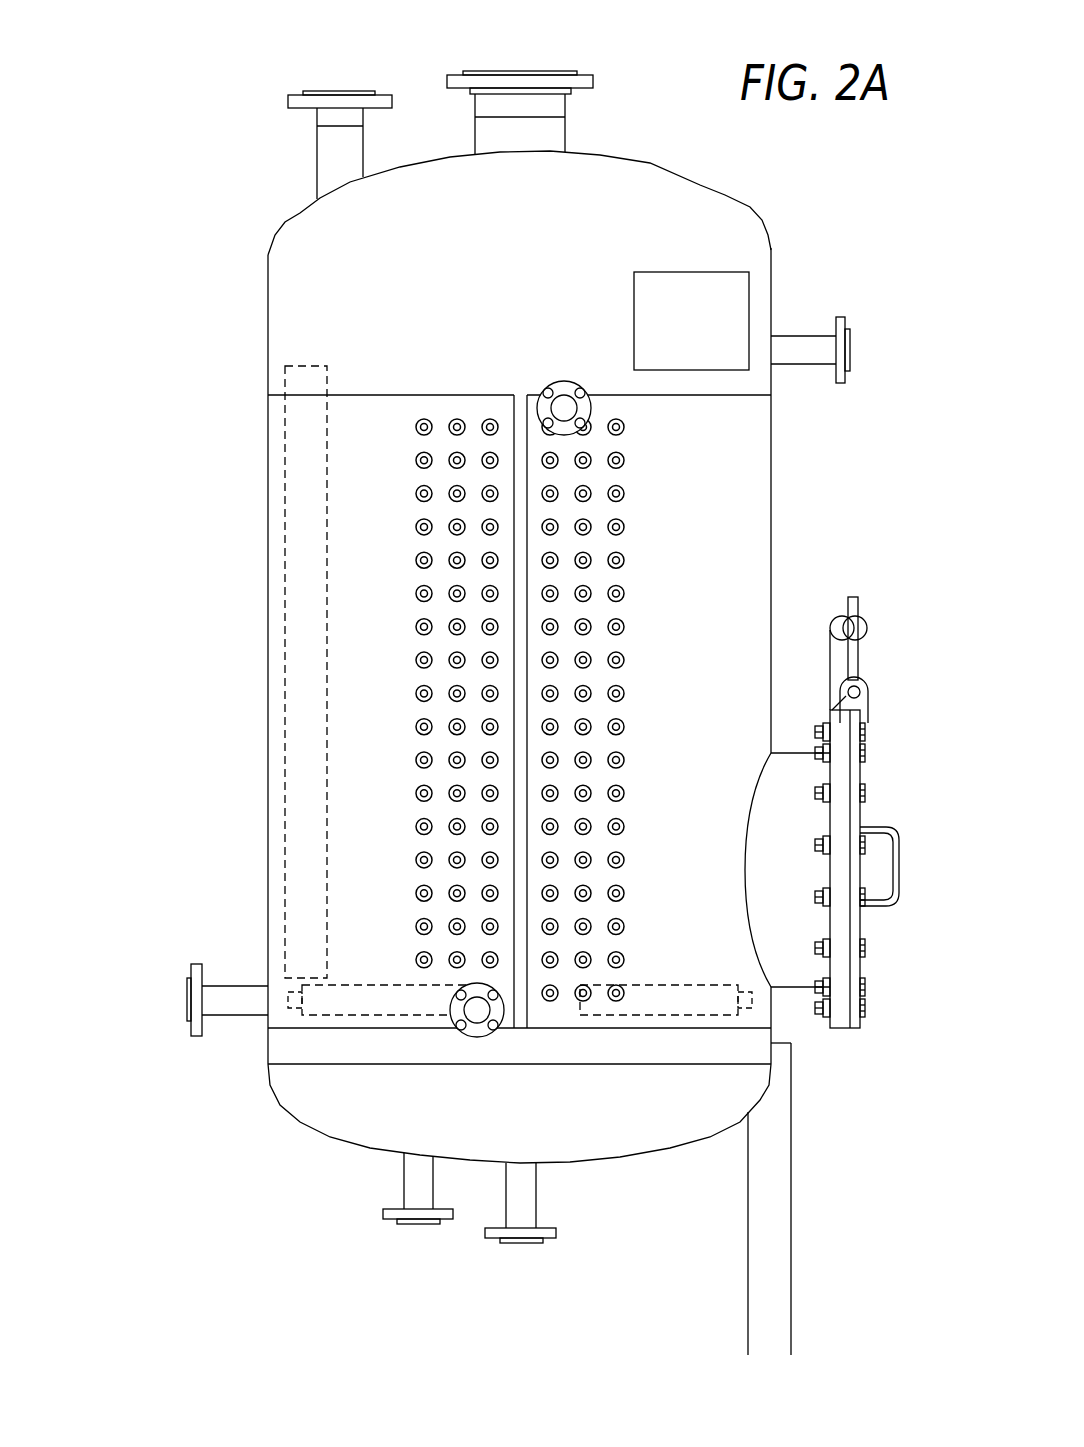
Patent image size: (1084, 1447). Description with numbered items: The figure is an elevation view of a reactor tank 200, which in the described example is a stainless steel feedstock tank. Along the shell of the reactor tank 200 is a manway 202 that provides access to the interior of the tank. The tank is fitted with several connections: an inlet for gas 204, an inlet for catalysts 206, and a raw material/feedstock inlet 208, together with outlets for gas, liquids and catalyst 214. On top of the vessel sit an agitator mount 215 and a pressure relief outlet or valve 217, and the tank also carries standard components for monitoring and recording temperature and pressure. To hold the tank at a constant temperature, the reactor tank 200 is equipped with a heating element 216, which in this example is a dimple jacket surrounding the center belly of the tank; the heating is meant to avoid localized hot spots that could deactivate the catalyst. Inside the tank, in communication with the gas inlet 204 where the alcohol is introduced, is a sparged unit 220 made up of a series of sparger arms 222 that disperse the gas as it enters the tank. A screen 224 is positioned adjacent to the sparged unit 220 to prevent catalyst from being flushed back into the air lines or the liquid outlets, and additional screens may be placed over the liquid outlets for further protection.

The reactor tank 200 is at (192, 368).
The manway 202 is at (858, 812).
The gas inlet 204 is at (157, 980).
The catalyst inlet 206 is at (367, 101).
The raw material/feedstock inlet 208 is at (850, 340).
The catalyst outlet 214 is at (157, 980).
The agitator mount 215 is at (548, 73).
The heating element 216 is at (771, 458).
The pressure relief outlet or valve 217 is at (367, 101).
The sparged unit 220 is at (368, 930).
The sparger arms 222 is at (342, 1008).
The screen 224 is at (380, 1073).